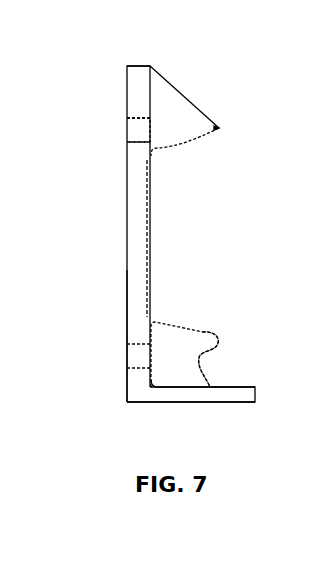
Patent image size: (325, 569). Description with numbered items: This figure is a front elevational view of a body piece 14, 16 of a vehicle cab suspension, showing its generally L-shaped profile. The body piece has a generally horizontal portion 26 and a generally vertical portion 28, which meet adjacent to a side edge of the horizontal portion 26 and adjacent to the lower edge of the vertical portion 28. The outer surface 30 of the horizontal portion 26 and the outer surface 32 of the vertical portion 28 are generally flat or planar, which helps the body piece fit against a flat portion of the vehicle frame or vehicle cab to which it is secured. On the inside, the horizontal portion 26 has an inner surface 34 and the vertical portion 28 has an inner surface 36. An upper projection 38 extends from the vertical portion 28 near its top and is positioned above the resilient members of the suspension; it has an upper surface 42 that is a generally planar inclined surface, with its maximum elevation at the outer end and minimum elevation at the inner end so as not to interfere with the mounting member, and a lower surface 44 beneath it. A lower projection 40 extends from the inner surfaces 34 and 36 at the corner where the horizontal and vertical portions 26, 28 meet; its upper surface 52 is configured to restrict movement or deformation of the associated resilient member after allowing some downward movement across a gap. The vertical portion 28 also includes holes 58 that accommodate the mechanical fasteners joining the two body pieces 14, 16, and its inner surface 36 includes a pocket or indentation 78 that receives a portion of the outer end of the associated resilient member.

The first body piece 14 is at (161, 234).
The second body piece 16 is at (161, 234).
The generally horizontal portion 26 is at (250, 400).
The generally vertical portion 28 is at (133, 197).
The outer surface of the generally horizontal portion 30 is at (180, 403).
The outer surface of the generally vertical portion 32 is at (127, 299).
The inner surface of the generally horizontal portion 34 is at (240, 387).
The inner surface of the generally vertical portion 36 is at (150, 98).
The upper projection 38 is at (222, 128).
The lower projection 40 is at (187, 366).
The upper surface of the upper projection 42 is at (190, 102).
The lower surface of the upper projection 44 is at (191, 145).
The upper surface of the lower projection 52 is at (203, 332).
The hole 58 is at (137, 127).
The pocket or indentation 78 is at (152, 230).